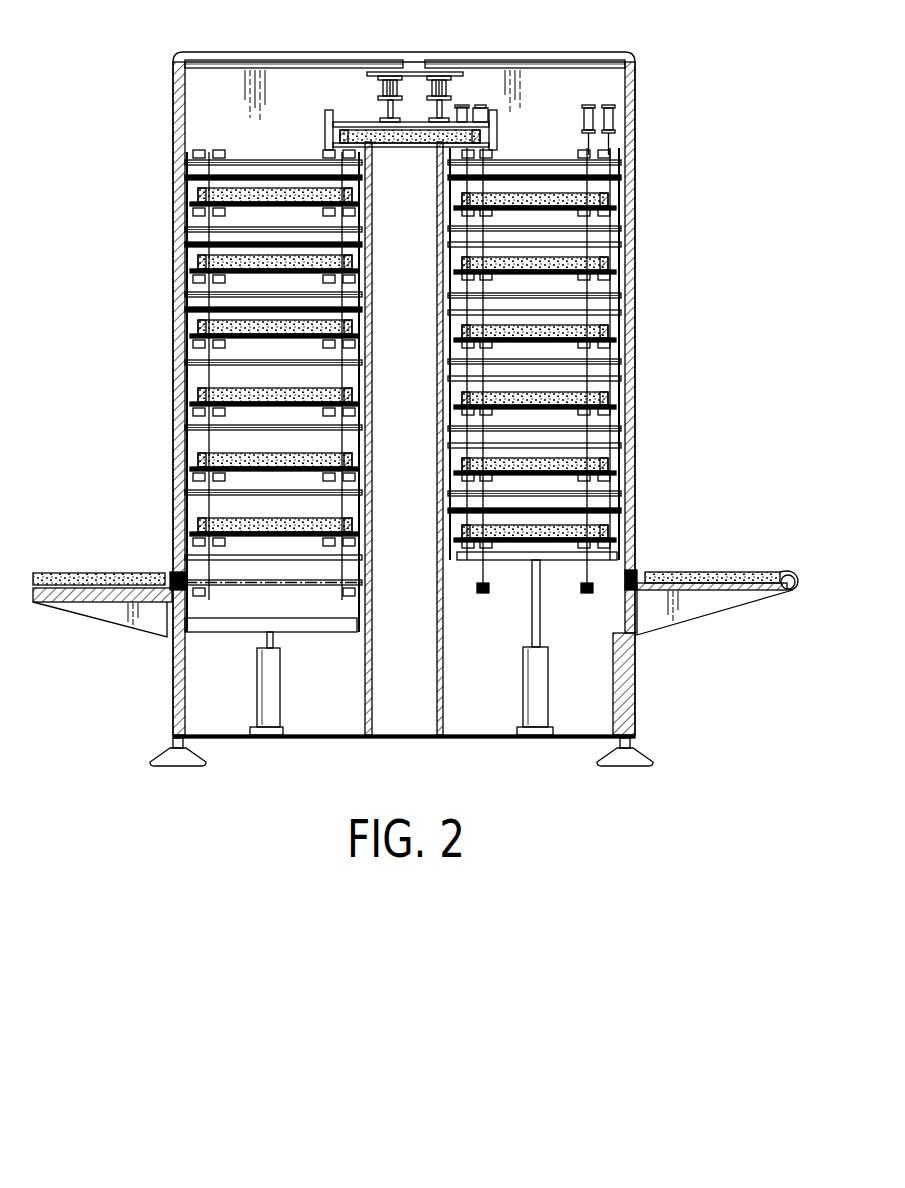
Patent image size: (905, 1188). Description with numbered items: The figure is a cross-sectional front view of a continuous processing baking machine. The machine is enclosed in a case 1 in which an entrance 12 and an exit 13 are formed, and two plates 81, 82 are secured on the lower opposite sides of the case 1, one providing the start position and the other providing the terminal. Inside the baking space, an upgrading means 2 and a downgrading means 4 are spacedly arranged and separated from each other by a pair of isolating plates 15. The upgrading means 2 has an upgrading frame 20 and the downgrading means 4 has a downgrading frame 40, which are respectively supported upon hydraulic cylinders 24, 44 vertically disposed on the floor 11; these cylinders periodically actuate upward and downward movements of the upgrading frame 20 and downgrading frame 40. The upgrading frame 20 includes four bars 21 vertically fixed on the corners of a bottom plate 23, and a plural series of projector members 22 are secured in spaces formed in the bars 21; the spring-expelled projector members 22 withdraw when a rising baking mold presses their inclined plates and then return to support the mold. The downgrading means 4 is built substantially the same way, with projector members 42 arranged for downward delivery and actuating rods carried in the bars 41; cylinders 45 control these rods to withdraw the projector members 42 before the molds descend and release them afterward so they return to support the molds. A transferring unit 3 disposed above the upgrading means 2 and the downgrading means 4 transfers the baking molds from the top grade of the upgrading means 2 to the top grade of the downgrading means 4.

The case 1 is at (173, 76).
The upgrading means 2 is at (288, 110).
The transferring unit 3 is at (420, 52).
The downgrading means 4 is at (560, 118).
The floor 11 is at (225, 738).
The entrance 12 is at (175, 577).
The exit 13 is at (635, 575).
The isolating plates 15 is at (368, 238).
The upgrading frame 20 is at (197, 421).
The bars 21 is at (196, 153).
The projector members 22 is at (197, 343).
The bottom plate 23 is at (300, 626).
The hydraulic cylinder 24 is at (268, 726).
The downgrading frame 40 is at (590, 375).
The bars 41 is at (620, 175).
The projector members 42 is at (610, 200).
The hydraulic cylinder 44 is at (535, 716).
The cylinders 45 is at (590, 105).
The plate 81 is at (114, 605).
The plate 82 is at (712, 600).